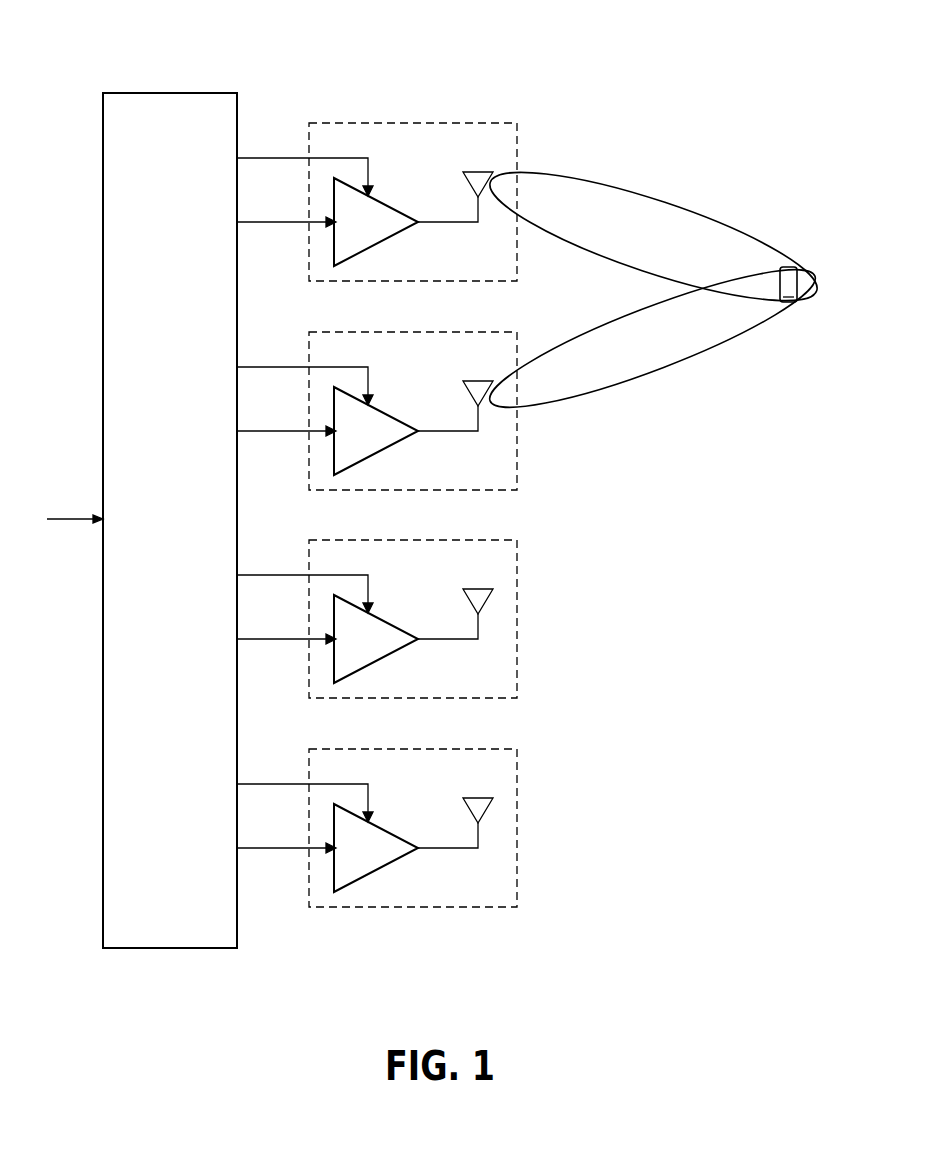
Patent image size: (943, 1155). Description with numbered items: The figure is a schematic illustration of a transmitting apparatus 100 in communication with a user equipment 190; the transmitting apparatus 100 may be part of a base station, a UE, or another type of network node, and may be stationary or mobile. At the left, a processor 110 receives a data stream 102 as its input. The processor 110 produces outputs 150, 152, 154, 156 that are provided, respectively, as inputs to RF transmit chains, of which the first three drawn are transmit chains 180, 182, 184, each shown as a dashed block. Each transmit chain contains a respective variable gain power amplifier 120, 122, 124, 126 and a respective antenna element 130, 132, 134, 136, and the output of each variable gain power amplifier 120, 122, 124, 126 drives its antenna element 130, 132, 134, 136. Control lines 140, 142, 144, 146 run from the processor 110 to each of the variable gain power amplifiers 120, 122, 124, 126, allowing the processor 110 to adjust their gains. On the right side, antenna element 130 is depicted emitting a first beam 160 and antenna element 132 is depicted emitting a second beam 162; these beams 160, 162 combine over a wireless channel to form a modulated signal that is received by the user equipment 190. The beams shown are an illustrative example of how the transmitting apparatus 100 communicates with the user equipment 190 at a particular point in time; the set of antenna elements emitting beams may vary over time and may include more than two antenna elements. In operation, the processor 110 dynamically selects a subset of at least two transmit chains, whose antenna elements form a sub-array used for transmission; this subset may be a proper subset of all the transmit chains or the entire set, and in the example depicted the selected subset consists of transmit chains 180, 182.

The transmitting apparatus 100 is at (283, 60).
The data stream 102 is at (69, 518).
The processor 110 is at (190, 541).
The variable gain power amplifier 120 is at (383, 232).
The variable gain power amplifier 122 is at (376, 431).
The variable gain power amplifier 124 is at (376, 639).
The variable gain power amplifier 126 is at (376, 848).
The antenna element 130 is at (478, 172).
The antenna element 132 is at (458, 385).
The antenna element 134 is at (458, 593).
The antenna element 136 is at (458, 802).
The control line 140 is at (369, 173).
The control line 142 is at (329, 386).
The control line 144 is at (329, 594).
The control line 146 is at (329, 803).
The output 150 is at (272, 222).
The output 152 is at (286, 413).
The output 154 is at (286, 621).
The output 156 is at (286, 830).
The first beam 160 is at (693, 215).
The second beam 162 is at (695, 364).
The RF transmit chain 180 is at (337, 123).
The RF transmit chain 182 is at (377, 395).
The RF transmit chain 184 is at (377, 603).
The user equipment 190 is at (792, 267).